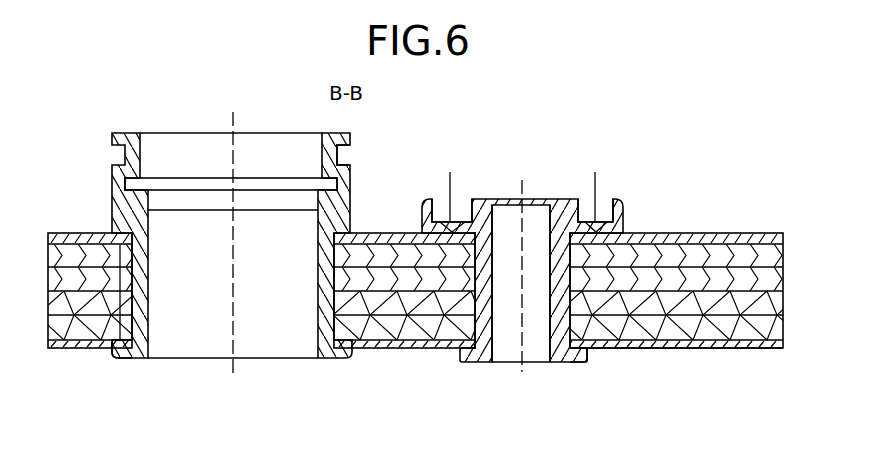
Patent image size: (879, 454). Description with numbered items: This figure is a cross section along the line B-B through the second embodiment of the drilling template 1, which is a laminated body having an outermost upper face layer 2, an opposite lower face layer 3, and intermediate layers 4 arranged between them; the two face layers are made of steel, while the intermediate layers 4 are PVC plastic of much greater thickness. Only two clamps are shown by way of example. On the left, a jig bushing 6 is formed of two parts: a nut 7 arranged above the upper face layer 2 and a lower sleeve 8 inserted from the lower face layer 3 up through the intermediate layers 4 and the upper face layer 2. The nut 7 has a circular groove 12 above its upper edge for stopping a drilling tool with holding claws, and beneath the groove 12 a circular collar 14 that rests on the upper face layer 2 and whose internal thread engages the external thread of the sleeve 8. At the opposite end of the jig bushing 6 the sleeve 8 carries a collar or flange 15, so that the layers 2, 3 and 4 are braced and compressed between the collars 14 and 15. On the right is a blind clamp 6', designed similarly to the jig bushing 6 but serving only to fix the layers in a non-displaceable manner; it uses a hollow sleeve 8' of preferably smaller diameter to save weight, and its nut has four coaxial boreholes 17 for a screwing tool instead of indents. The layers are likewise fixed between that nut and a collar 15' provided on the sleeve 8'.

The drilling template 1 is at (716, 103).
The upper face layer 2 is at (692, 235).
The lower face layer 3 is at (718, 345).
The intermediate layer 4 is at (772, 258).
The jig bushing 6 is at (232, 238).
The blind clamp 6' is at (534, 243).
The nut 7 is at (275, 145).
The sleeve 8 is at (233, 266).
The hollow sleeve 8' is at (521, 299).
The circular groove 12 is at (359, 149).
The circular collar 14 is at (127, 210).
The collar 15 is at (110, 380).
The collar 15' is at (593, 382).
The coaxial boreholes 17 is at (457, 187).